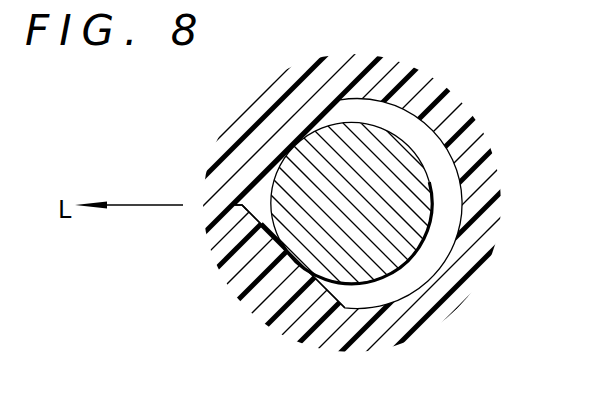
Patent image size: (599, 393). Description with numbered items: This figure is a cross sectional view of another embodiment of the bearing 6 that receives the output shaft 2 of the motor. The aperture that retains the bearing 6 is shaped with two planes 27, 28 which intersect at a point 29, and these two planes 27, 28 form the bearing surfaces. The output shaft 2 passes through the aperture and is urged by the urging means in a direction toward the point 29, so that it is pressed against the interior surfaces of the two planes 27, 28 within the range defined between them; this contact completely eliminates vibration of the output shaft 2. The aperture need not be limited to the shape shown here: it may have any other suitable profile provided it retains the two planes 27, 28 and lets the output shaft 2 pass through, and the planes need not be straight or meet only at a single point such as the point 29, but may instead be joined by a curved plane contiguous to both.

The output shaft 2 is at (400, 237).
The bearing 6 is at (440, 111).
The plane 27 is at (262, 196).
The plane 28 is at (293, 297).
The point 29 is at (199, 245).